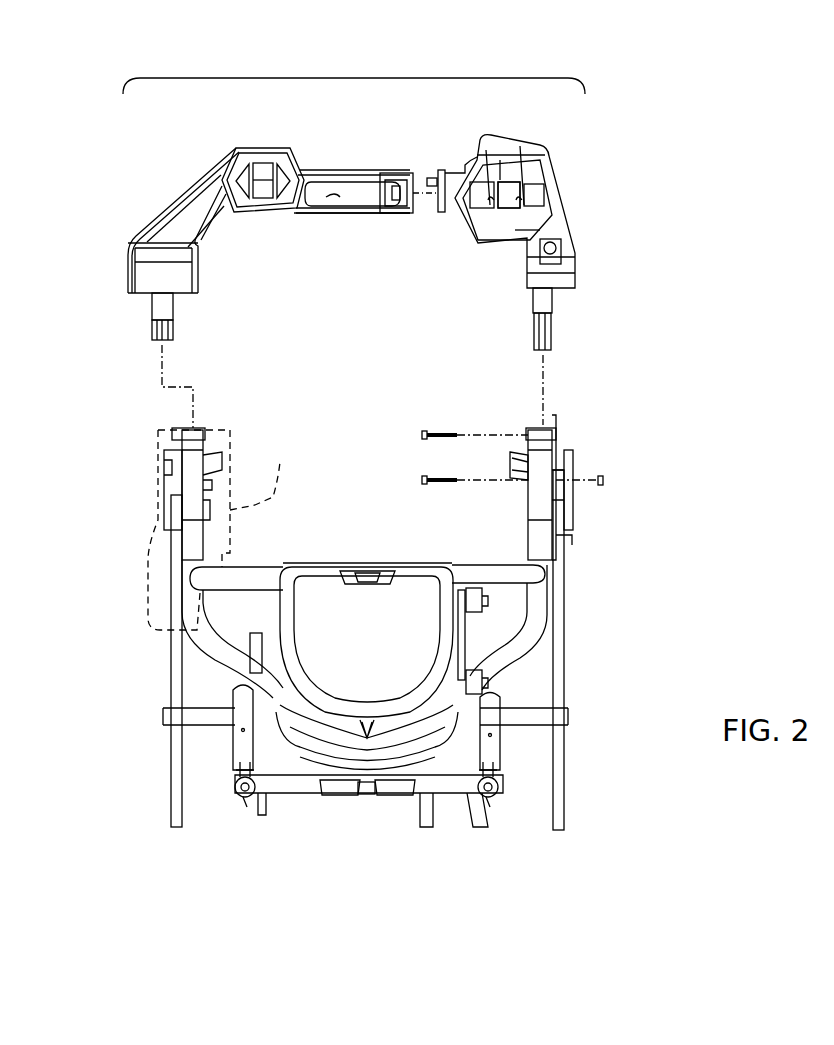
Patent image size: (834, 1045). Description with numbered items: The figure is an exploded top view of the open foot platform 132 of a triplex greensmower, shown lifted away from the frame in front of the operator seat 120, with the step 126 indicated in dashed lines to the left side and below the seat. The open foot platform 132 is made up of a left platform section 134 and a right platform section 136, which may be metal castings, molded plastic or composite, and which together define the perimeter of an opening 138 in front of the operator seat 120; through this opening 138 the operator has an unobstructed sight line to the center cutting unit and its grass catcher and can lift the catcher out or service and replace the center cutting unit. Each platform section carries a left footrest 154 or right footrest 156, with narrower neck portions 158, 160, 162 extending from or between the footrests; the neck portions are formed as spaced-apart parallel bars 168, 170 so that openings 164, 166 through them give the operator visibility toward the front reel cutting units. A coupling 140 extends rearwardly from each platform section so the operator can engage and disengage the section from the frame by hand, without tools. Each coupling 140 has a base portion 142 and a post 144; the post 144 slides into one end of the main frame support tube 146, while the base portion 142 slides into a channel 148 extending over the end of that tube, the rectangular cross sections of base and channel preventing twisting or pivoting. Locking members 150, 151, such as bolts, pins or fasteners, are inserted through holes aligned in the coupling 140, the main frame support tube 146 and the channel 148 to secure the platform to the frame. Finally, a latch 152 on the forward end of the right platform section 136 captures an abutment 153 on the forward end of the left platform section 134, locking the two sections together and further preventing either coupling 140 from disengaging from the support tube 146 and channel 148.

The operator seat 120 is at (417, 582).
The step 126 is at (224, 530).
The open foot platform 132 is at (296, 78).
The left platform section 134 is at (220, 145).
The right platform section 136 is at (566, 203).
The opening 138 is at (299, 367).
The coupling 140 is at (405, 355).
The base portion 142 is at (172, 303).
The post 144 is at (172, 331).
The main frame support tube 146 is at (195, 525).
The channel 148 is at (208, 433).
The locking member 150 is at (442, 478).
The locking member 151 is at (443, 433).
The latch 152 is at (433, 178).
The abutment 153 is at (396, 201).
The left footrest 154 is at (248, 168).
The right footrest 156 is at (502, 222).
The neck portion 158 is at (218, 188).
The neck portion 160 is at (395, 172).
The neck portion 162 is at (578, 259).
The opening 164 is at (190, 216).
The opening 166 is at (337, 199).
The parallel bar 168 is at (350, 172).
The parallel bar 170 is at (368, 214).